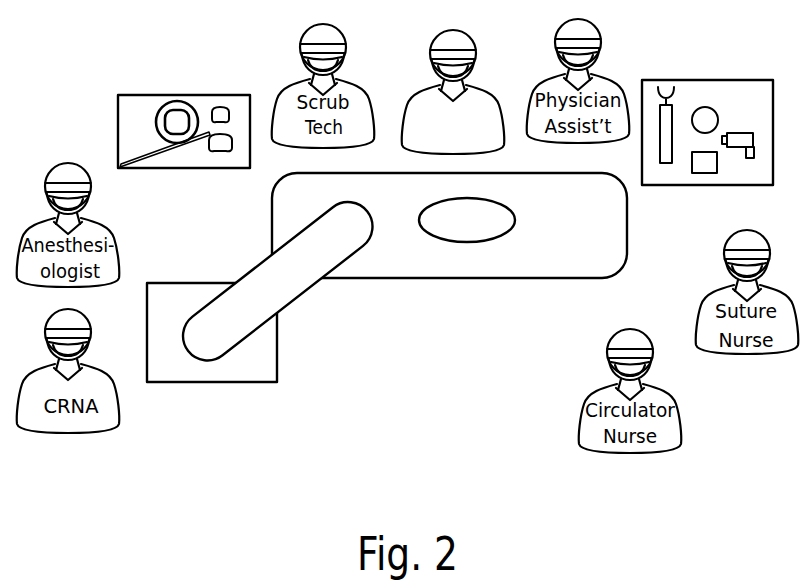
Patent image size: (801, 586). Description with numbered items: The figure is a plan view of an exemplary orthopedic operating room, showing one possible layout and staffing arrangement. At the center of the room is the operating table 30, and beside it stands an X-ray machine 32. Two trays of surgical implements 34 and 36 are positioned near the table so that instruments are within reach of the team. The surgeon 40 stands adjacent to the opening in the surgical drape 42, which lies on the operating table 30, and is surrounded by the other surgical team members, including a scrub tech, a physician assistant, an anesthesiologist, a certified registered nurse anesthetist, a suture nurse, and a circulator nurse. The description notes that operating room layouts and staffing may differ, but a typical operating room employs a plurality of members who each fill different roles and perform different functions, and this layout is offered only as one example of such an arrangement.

The operating table 30 is at (605, 246).
The X-ray machine 32 is at (185, 372).
The tray of surgical implements 34 is at (150, 103).
The tray of surgical implements 36 is at (726, 88).
The surgeon 40 is at (477, 68).
The surgical drape 42 is at (510, 225).